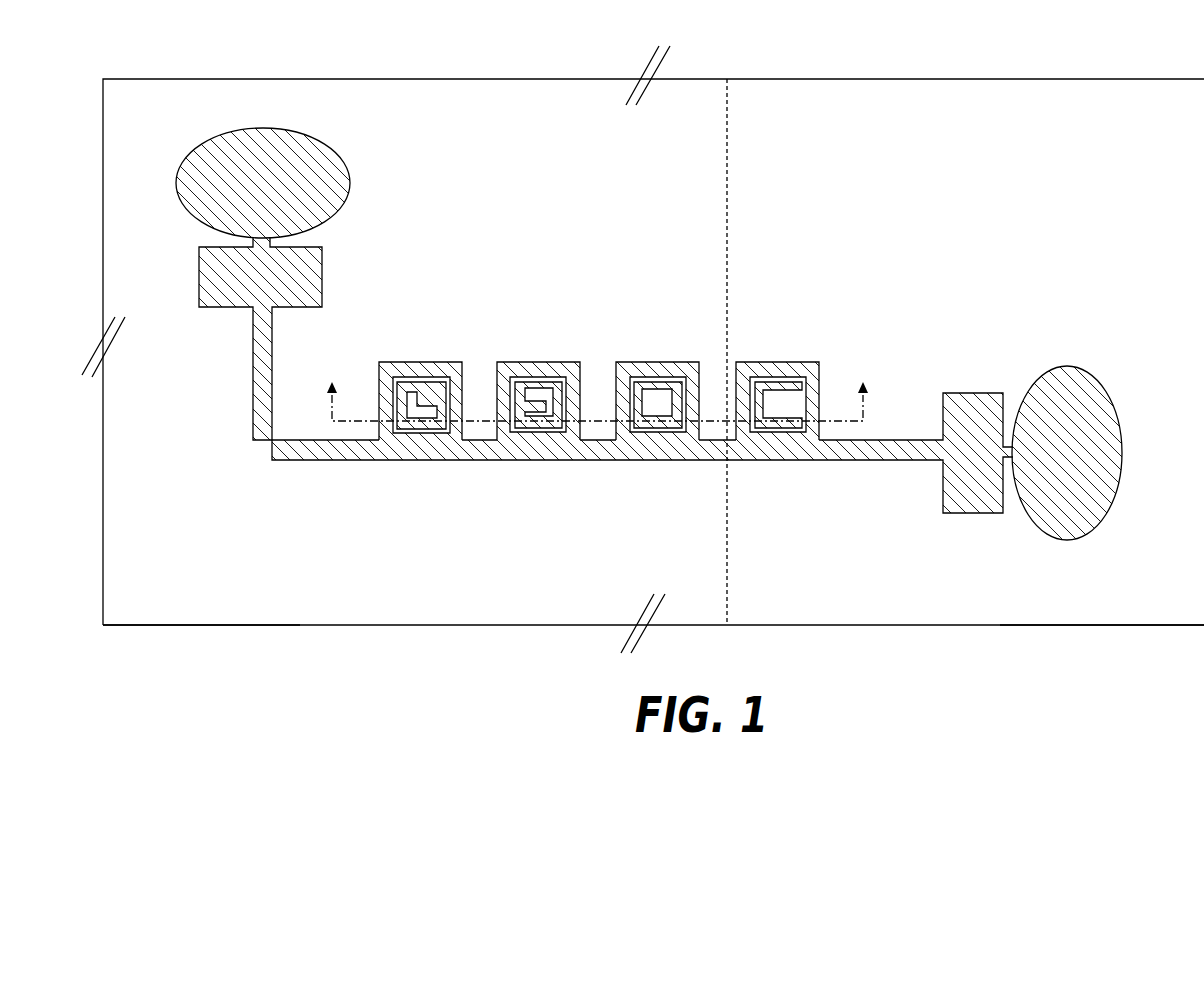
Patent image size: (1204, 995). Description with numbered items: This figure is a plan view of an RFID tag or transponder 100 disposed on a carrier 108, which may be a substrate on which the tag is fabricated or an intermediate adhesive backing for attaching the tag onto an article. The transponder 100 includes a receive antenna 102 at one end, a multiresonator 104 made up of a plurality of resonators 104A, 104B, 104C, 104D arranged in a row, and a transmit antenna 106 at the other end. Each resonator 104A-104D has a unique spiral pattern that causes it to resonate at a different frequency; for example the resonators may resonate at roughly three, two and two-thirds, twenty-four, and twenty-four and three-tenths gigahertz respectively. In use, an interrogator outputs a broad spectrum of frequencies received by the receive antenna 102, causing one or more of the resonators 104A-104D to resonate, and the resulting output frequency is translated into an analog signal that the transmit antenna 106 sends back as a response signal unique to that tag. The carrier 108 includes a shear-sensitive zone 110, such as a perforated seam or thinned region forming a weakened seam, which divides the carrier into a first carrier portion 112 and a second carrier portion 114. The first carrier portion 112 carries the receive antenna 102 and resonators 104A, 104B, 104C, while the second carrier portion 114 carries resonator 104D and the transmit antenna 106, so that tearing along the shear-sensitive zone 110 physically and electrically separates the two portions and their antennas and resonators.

The transponder 100 is at (248, 57).
The receive antenna 102 is at (345, 165).
The multiresonator 104 is at (885, 280).
The resonator 104A is at (446, 362).
The resonator 104B is at (563, 362).
The resonator 104C is at (676, 362).
The resonator 104D is at (792, 362).
The transmit antenna 106 is at (1090, 390).
The carrier 108 is at (1027, 98).
The shear-sensitive zone 110 is at (728, 108).
The first carrier portion 112 is at (172, 610).
The second carrier portion 114 is at (1162, 612).